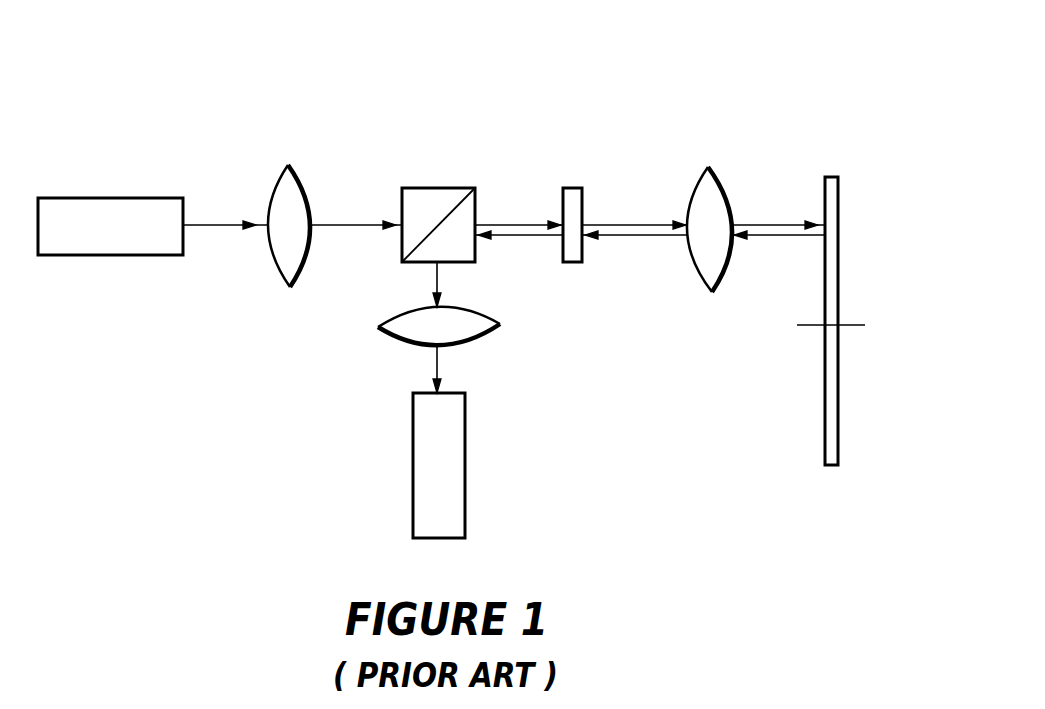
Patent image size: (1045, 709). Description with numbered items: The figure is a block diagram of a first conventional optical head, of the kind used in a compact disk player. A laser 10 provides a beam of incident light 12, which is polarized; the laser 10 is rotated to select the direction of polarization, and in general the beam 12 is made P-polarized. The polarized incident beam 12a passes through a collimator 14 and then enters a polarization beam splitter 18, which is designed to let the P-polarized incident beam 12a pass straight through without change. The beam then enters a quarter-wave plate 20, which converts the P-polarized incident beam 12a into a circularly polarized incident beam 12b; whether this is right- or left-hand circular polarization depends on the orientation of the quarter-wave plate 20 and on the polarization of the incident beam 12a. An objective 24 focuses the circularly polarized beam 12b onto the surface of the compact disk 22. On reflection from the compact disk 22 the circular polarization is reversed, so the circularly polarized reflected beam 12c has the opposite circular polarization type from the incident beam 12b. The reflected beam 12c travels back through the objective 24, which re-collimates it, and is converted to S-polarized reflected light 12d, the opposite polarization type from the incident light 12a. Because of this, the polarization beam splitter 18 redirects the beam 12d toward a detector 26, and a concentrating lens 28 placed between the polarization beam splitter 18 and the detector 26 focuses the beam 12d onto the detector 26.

The laser 10 is at (113, 197).
The beam of incident light 12 is at (207, 222).
The polarized incident beam 12a is at (503, 222).
The circularly polarized incident beam 12b is at (633, 220).
The circularly polarized reflected beam 12c is at (763, 237).
The second polarization-type reflected light 12d is at (437, 272).
The collimator 14 is at (287, 165).
The polarization beam splitter 18 is at (428, 188).
The quarter-wave plate 20 is at (575, 188).
The compact disk 22 is at (832, 202).
The objective 24 is at (708, 167).
The detector 26 is at (465, 418).
The concentrating lens 28 is at (497, 323).